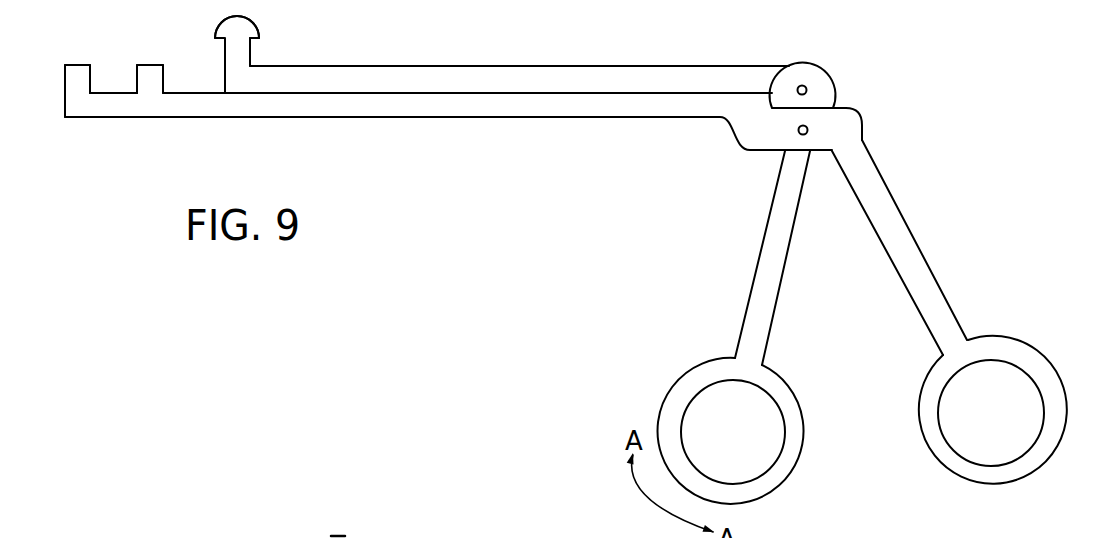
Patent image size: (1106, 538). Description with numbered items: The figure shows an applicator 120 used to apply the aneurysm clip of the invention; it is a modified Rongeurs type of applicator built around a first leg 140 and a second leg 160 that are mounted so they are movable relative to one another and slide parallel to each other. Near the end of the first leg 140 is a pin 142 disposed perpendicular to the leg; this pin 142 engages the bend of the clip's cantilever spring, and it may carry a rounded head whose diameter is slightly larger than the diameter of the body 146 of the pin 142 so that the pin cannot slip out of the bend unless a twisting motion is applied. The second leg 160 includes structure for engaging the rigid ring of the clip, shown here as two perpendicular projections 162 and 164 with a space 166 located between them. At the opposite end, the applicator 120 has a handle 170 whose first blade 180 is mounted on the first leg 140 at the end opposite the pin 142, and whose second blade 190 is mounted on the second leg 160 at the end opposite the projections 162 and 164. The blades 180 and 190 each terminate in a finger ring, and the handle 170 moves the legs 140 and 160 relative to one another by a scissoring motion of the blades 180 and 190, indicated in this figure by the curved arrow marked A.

The applicator 120 is at (656, 47).
The first leg 140 is at (508, 80).
The pin 142 is at (238, 28).
The body of pin 146 is at (248, 54).
The second leg 160 is at (517, 105).
The projection 162 is at (78, 72).
The projection 164 is at (158, 73).
The space 166 is at (112, 78).
The handle 170 is at (969, 480).
The first blade 180 is at (768, 250).
The second blade 190 is at (918, 268).